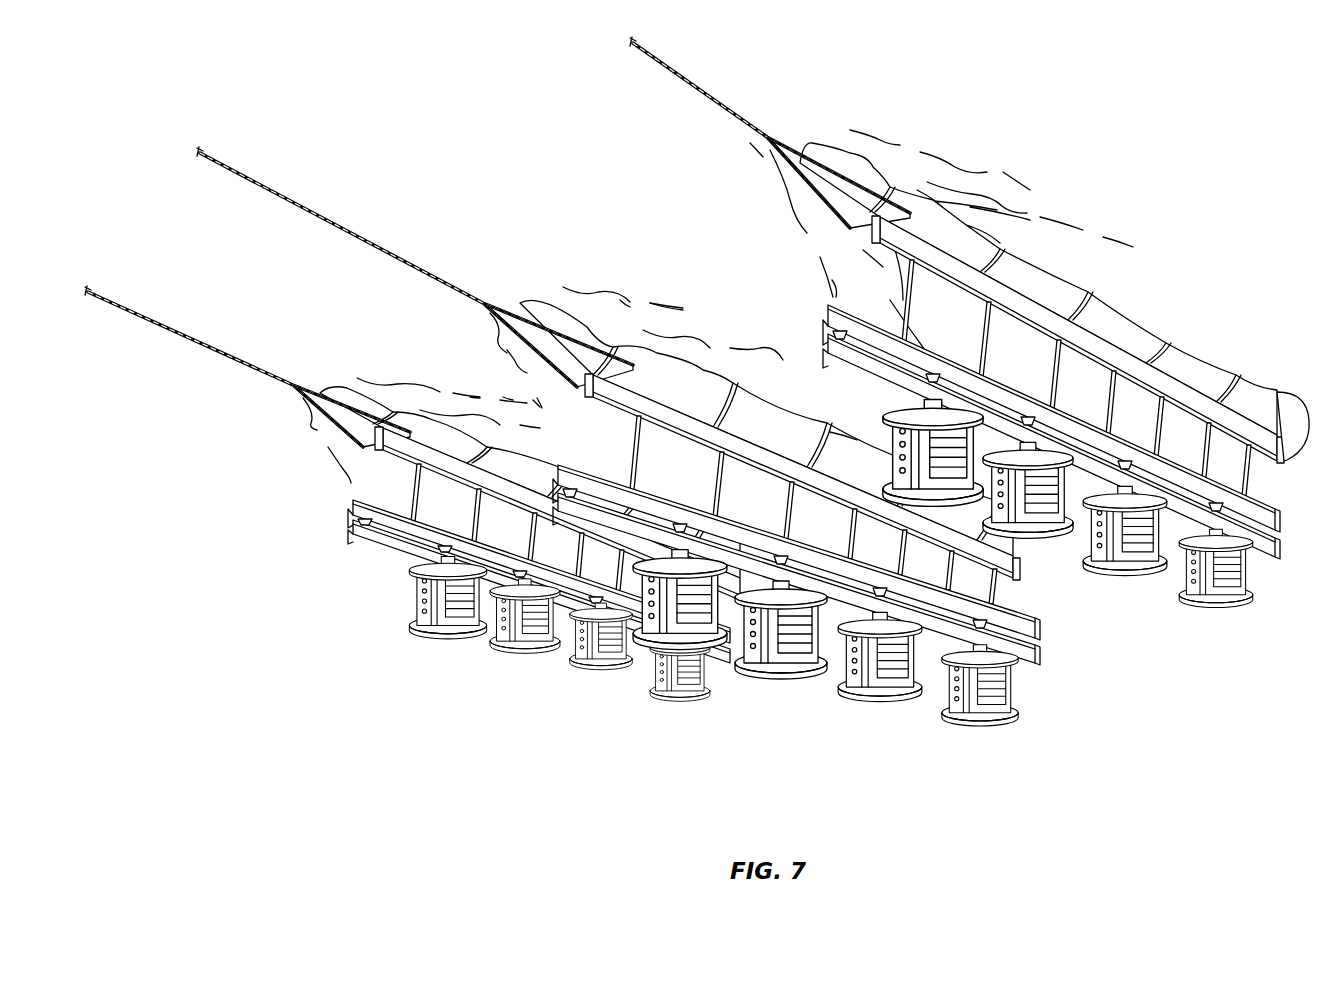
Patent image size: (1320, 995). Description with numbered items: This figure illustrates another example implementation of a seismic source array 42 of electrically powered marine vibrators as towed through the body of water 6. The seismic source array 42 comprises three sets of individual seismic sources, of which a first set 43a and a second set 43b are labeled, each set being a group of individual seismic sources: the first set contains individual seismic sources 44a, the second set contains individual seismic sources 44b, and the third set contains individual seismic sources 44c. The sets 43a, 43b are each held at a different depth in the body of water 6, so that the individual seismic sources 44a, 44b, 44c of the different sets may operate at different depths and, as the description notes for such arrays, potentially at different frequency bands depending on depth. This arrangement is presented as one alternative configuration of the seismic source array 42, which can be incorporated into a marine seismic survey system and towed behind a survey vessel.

The body of water 6 is at (331, 149).
The seismic source array 42 is at (697, 440).
The first set of individual seismic sources 43a is at (412, 419).
The second set of individual seismic sources 43b is at (753, 440).
The individual seismic sources of the first set 44a is at (443, 630).
The individual seismic sources of the second set 44b is at (705, 648).
The individual seismic sources of the third set 44c is at (887, 425).